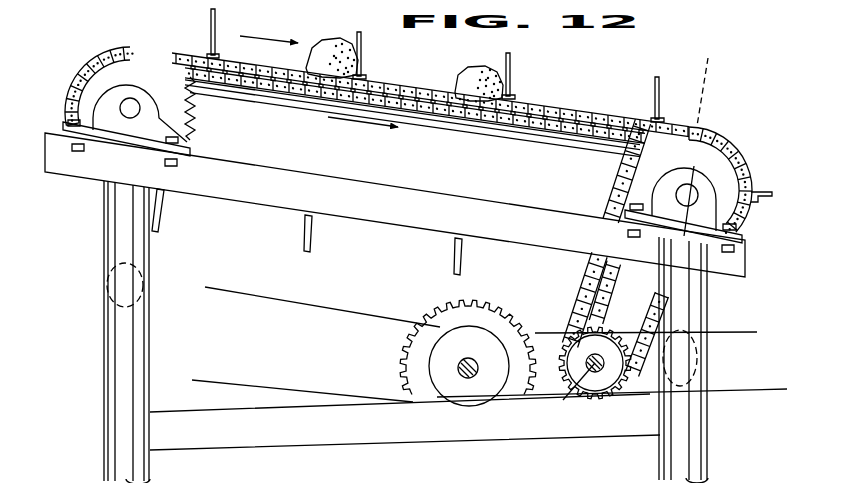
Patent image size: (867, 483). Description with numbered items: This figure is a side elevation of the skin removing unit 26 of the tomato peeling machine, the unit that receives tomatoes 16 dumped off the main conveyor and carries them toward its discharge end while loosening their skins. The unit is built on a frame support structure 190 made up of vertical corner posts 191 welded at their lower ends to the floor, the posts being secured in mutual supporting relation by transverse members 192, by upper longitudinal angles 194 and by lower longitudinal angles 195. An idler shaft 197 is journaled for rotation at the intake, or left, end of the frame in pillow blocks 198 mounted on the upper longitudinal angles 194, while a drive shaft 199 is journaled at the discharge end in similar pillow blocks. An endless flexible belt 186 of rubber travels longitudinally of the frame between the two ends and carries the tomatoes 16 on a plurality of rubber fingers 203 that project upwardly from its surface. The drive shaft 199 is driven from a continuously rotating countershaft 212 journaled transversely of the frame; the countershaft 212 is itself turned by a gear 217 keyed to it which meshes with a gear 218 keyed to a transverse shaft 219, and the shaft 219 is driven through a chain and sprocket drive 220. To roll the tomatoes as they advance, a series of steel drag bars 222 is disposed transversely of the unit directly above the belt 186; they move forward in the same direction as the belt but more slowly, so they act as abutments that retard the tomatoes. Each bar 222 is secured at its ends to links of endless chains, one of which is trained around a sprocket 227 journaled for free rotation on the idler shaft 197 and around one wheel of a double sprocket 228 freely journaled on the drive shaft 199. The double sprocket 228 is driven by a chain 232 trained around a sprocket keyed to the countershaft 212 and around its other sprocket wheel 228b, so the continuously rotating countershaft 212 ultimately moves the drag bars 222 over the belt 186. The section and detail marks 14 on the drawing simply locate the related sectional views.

The conveyor 14 is at (742, 80).
The tomato 16 is at (328, 50).
The skin removing unit 26 is at (186, 47).
The endless flexible belt 186 is at (461, 113).
The frame support structure 190 is at (100, 208).
The vertical corner posts 191 is at (116, 251).
The transverse members 192 is at (107, 285).
The upper longitudinal angles 194 is at (395, 205).
The lower longitudinal angles 195 is at (405, 422).
The idler shaft 197 is at (136, 103).
The pillow blocks 198 is at (150, 127).
The drive shaft 199 is at (640, 166).
The rubber fingers 203 is at (556, 128).
The countershaft 212 is at (592, 360).
The gear 217 is at (538, 347).
The gear 218 is at (465, 316).
The transverse shaft 219 is at (458, 364).
The chain and sprocket drive 220 is at (334, 307).
The drag bars 222 is at (218, 22).
The sprocket 227 is at (173, 112).
The double sprocket 228 is at (655, 163).
The sprocket wheel 228b is at (622, 184).
The chain 232 is at (590, 268).